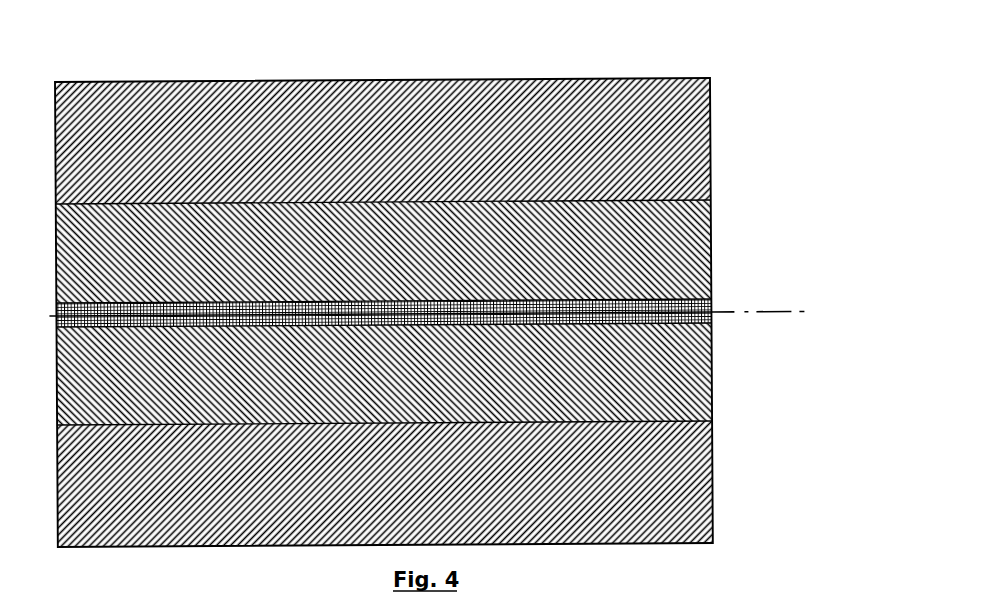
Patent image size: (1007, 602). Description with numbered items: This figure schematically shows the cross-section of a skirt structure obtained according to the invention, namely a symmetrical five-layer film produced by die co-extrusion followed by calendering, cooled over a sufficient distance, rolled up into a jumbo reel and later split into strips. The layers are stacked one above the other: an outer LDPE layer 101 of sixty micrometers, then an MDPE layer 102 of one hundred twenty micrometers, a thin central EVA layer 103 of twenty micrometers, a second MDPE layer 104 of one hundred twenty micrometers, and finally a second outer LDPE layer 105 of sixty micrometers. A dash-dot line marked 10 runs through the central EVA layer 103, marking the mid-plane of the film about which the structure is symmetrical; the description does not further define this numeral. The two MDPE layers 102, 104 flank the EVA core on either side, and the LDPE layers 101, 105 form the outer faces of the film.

The LDPE layer 101 is at (677, 149).
The MDPE layer 102 is at (685, 259).
The EVA layer 103 is at (710, 304).
The laminate / central plane 10 is at (730, 316).
The MDPE layer 104 is at (680, 387).
The LDPE layer 105 is at (685, 507).